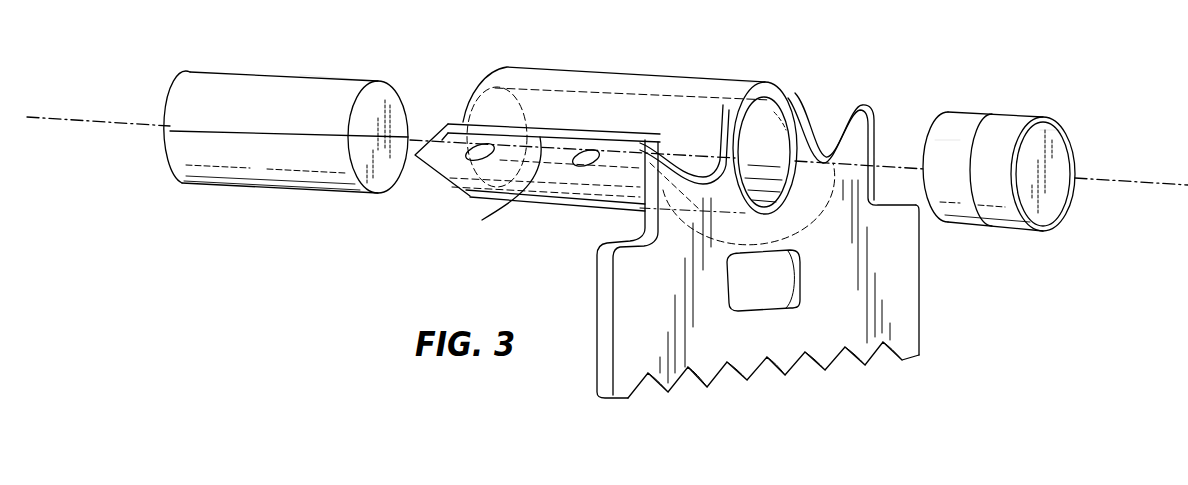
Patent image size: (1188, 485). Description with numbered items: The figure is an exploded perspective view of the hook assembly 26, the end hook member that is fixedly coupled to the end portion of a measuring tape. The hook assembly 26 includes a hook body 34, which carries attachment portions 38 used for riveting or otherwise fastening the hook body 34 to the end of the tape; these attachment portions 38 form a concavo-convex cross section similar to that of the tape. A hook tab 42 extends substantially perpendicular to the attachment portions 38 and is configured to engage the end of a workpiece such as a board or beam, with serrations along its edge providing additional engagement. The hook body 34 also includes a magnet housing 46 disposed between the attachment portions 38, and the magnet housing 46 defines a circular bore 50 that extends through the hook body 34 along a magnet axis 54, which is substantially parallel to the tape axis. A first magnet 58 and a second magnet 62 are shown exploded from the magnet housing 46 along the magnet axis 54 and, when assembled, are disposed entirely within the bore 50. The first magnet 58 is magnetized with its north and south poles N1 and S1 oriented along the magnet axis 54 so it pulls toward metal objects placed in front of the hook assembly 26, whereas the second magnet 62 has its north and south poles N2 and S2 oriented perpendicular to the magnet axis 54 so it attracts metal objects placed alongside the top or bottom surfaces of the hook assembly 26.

The hook assembly 26 is at (696, 59).
The hook body 34 is at (573, 212).
The attachment portions 38 is at (482, 220).
The hook tab 42 is at (920, 306).
The magnet housing 46 is at (551, 68).
The circular bore 50 is at (478, 95).
The magnet axis 54 is at (69, 117).
The first magnet 58 is at (1006, 122).
The second magnet 62 is at (273, 82).
The south magnetic pole of first magnet S1 is at (948, 122).
The north magnetic pole of first magnet N1 is at (1050, 119).
The south pole of second magnet S2 is at (330, 86).
The north pole of second magnet N2 is at (312, 182).